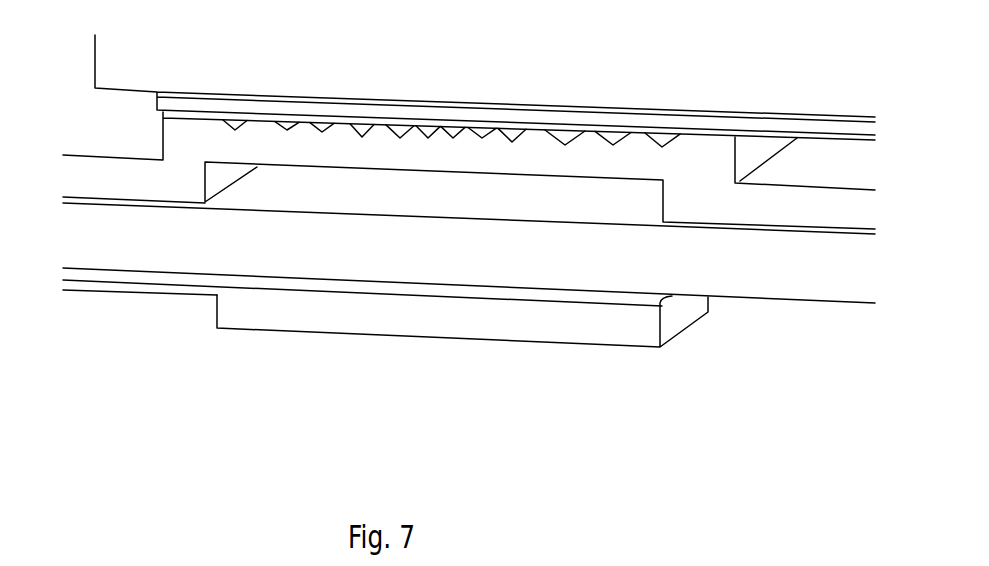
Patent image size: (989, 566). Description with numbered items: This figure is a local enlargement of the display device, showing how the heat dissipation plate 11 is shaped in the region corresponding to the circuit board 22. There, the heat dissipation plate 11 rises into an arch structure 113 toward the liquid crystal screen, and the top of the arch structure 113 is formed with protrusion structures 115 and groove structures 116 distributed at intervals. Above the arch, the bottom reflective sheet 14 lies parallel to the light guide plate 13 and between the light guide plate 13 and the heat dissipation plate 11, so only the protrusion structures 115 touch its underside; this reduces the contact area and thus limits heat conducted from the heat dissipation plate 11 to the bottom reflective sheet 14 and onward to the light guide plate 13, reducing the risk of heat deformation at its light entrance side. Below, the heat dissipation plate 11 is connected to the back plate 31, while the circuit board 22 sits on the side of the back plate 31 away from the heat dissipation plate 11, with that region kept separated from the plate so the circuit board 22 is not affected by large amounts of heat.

The heat dissipation plate 11 is at (183, 173).
The light guide plate 13 is at (93, 62).
The bottom reflective sheet 14 is at (687, 125).
The circuit board 22 is at (420, 312).
The back plate 31 is at (232, 253).
The arch structure 113 is at (687, 177).
The protrusion structure 115 is at (593, 138).
The groove structure 116 is at (285, 127).